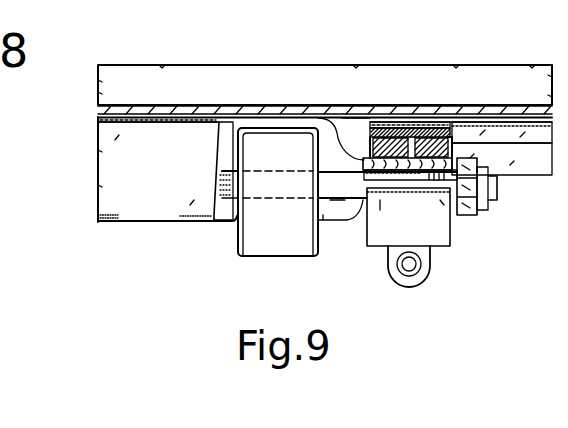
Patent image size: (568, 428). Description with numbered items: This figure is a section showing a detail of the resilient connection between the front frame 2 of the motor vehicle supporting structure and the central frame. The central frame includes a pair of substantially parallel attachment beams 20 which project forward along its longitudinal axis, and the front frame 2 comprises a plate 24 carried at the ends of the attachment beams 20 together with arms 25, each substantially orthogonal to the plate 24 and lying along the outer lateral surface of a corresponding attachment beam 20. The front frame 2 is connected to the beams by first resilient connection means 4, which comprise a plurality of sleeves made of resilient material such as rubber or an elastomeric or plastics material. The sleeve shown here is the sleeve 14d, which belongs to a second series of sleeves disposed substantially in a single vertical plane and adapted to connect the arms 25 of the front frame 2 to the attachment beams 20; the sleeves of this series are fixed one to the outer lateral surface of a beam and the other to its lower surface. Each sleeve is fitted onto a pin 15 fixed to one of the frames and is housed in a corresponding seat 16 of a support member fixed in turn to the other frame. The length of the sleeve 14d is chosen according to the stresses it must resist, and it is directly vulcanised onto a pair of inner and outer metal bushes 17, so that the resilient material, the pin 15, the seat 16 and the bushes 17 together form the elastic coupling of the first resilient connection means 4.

The front frame 2 is at (80, 170).
The first resilient connection means 4 is at (412, 150).
The sleeve 14d is at (395, 198).
The pin 15 is at (336, 190).
The seat 16 is at (428, 160).
The inner and outer metal bushes 17 is at (408, 168).
The attachment beam 20 is at (240, 82).
The plate 24 is at (101, 223).
The arm 25 is at (162, 190).